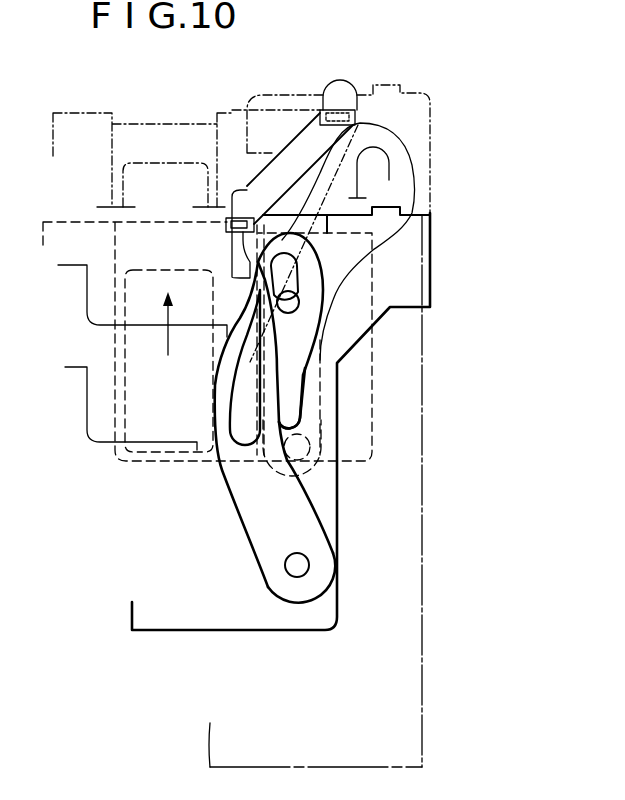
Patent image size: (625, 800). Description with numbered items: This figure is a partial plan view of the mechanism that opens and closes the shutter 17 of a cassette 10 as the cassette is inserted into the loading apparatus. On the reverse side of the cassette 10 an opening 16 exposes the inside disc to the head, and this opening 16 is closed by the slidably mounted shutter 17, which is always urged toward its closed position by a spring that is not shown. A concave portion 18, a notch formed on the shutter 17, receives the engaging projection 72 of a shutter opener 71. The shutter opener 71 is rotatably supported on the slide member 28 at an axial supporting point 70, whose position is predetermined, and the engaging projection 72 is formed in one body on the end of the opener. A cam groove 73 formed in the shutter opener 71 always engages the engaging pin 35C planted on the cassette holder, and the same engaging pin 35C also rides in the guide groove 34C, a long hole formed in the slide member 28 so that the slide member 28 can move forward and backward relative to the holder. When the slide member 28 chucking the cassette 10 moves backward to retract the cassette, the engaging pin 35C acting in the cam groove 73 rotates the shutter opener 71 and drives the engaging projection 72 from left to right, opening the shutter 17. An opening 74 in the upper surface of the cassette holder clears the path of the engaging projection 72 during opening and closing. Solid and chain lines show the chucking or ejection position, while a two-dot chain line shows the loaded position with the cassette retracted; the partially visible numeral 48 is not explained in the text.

The cassette 10 is at (62, 100).
The opening 16 is at (157, 163).
The shutter 17 is at (217, 113).
The concave portion 18 is at (318, 110).
The slide member 28 is at (348, 555).
The guide groove 34C is at (303, 400).
The engaging pin 35C is at (291, 302).
The upper member 48 is at (439, 6).
The axial supporting point 70 is at (297, 578).
The shutter opener 71 is at (387, 237).
The engaging projection 72 is at (248, 213).
The cam groove 73 is at (228, 397).
The opening 74 is at (290, 143).